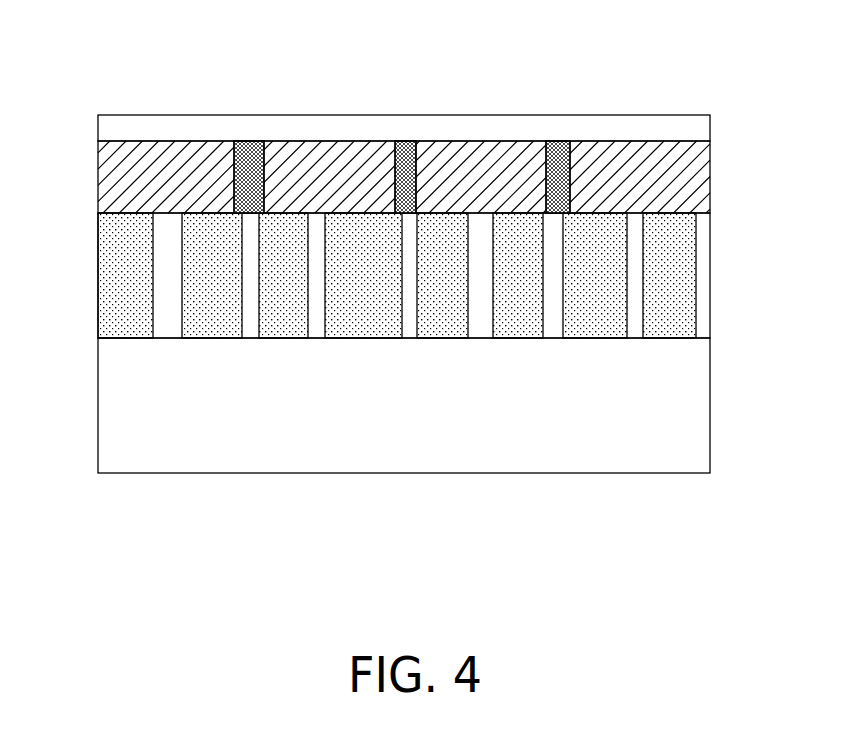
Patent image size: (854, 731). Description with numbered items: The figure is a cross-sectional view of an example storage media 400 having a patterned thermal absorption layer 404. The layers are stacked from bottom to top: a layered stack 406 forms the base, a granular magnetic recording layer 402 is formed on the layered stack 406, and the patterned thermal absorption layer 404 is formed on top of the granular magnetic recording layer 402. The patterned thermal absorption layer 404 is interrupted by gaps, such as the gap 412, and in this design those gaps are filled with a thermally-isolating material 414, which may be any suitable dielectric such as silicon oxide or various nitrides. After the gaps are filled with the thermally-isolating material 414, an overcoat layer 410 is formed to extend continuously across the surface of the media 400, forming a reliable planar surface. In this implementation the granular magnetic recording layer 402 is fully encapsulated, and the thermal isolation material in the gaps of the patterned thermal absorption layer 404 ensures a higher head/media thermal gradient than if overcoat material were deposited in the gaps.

The storage media 400 is at (172, 88).
The granular magnetic recording layer 402 is at (727, 276).
The patterned thermal absorption layer 404 is at (727, 178).
The layered stack 406 is at (730, 408).
The overcoat layer 410 is at (710, 127).
The gap 412 is at (560, 141).
The thermally-isolating material 414 is at (557, 155).